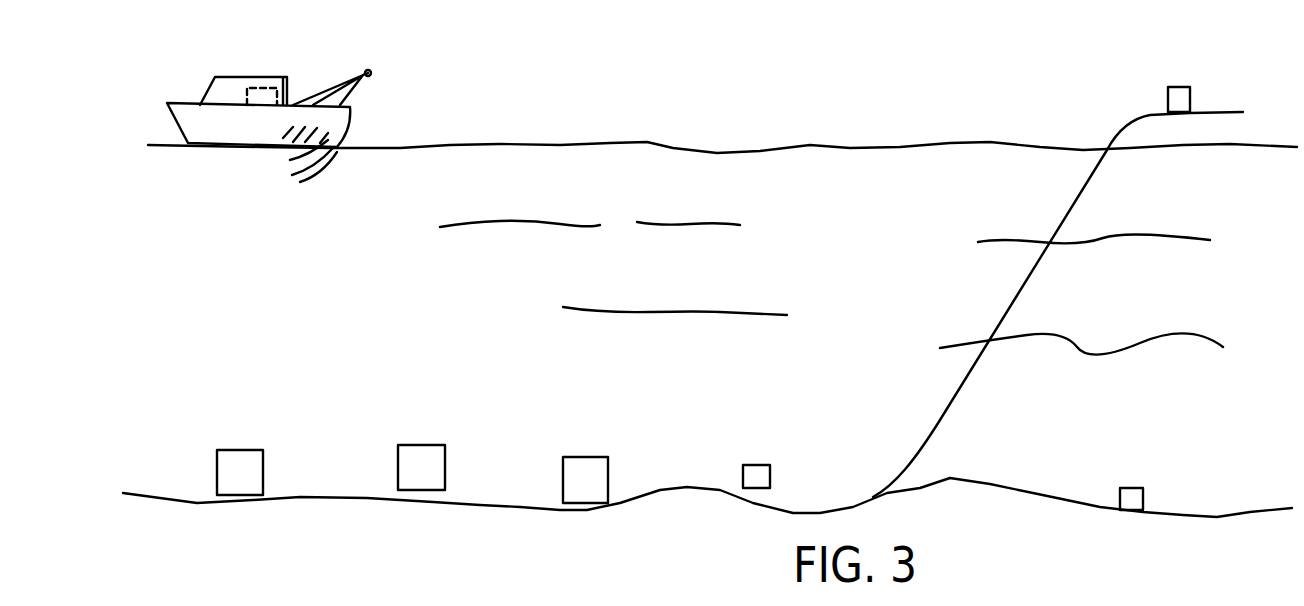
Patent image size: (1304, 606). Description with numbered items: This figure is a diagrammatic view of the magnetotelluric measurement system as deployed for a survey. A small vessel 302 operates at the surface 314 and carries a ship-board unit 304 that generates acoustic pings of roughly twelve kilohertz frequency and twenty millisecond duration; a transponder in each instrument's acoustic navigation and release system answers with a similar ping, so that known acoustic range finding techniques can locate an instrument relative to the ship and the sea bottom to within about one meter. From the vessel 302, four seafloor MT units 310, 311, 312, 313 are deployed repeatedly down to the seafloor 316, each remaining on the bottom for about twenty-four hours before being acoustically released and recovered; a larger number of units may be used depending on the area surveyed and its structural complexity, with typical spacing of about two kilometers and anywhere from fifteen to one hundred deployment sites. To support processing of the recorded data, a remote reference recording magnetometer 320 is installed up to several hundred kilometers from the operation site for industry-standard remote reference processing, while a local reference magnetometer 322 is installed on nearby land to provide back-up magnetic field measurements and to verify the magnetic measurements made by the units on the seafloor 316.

The vessel 302 is at (183, 102).
The ship-board unit 304 is at (267, 88).
The seafloor MT unit 310 is at (233, 450).
The seafloor MT unit 311 is at (420, 443).
The seafloor MT unit 312 is at (583, 457).
The seafloor MT unit 313 is at (763, 465).
The surface 314 is at (673, 148).
The seafloor 316 is at (180, 500).
The remote reference recording magnetometer 320 is at (1138, 488).
The local reference magnetometer 322 is at (1190, 90).